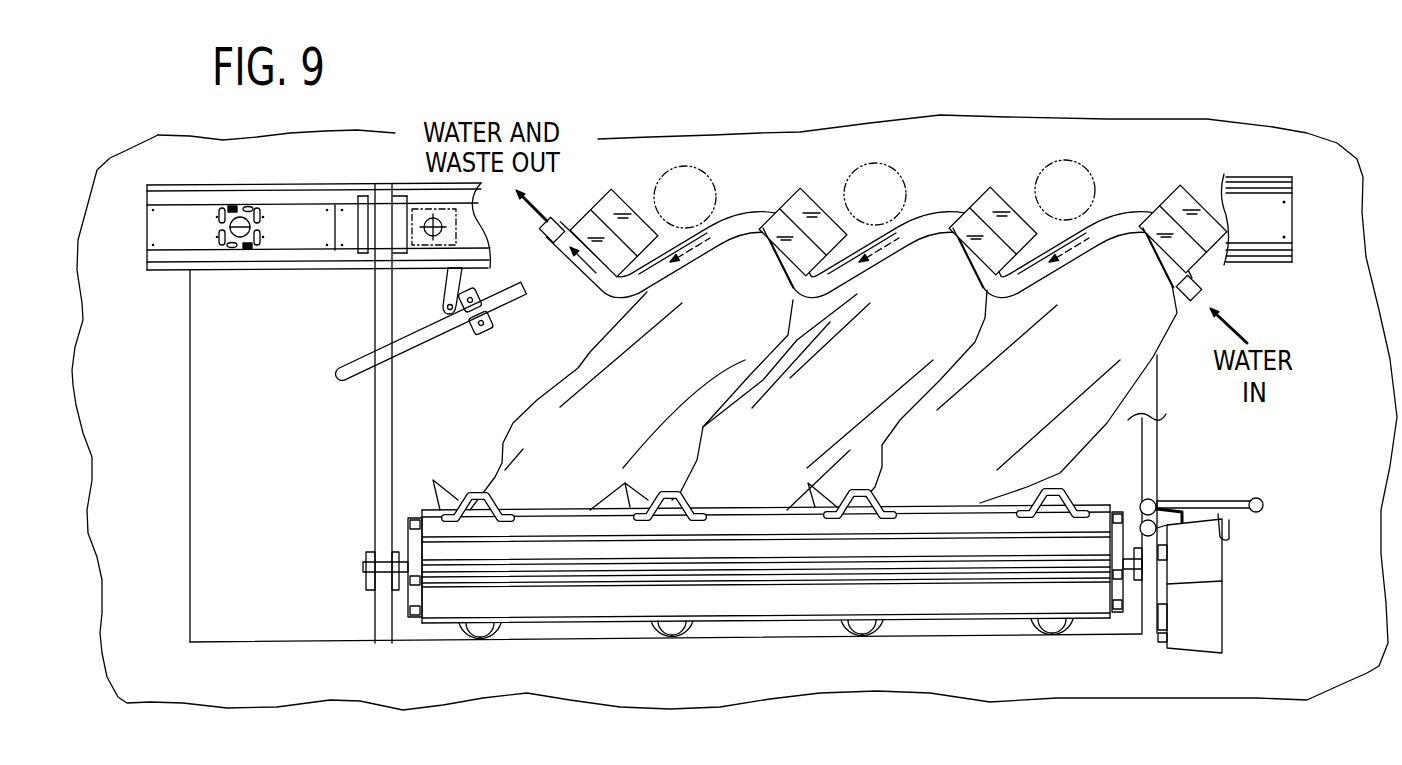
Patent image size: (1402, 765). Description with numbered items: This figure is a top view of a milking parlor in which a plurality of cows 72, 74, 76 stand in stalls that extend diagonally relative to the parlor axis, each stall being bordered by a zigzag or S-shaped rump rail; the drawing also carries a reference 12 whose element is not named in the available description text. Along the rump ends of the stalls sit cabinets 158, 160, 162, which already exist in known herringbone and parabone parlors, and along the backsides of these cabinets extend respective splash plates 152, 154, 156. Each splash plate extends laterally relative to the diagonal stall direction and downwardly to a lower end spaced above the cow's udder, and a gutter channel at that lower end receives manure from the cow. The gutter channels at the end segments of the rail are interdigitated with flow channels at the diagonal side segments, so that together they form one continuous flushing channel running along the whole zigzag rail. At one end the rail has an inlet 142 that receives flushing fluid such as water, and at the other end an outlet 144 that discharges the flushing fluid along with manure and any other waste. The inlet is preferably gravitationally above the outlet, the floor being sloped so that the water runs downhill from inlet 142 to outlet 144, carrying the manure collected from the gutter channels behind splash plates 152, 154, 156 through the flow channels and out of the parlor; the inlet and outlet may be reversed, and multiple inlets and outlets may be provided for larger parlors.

The articles being processed 12 is at (1053, 187).
The cow 72 is at (964, 478).
The cow 74 is at (776, 478).
The cow 76 is at (586, 478).
The inlet 142 is at (1198, 291).
The outlet 144 is at (553, 228).
The splash plate 152 is at (1160, 262).
The splash plate 154 is at (965, 262).
The splash plate 156 is at (782, 268).
The cabinet 158 is at (1160, 214).
The cabinet 160 is at (963, 218).
The cabinet 162 is at (775, 223).